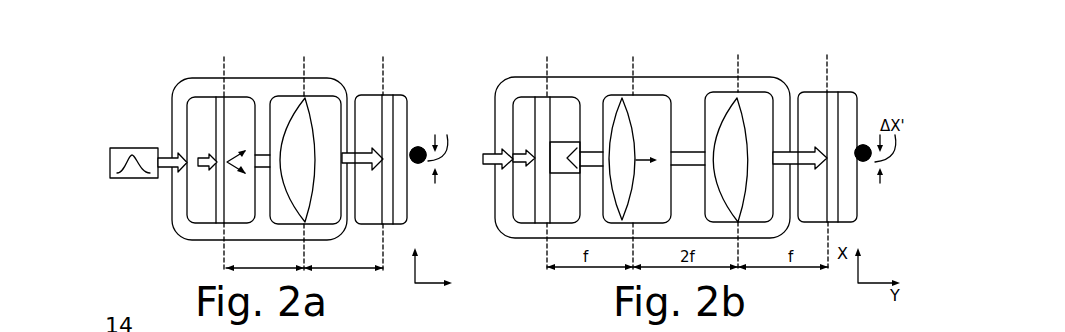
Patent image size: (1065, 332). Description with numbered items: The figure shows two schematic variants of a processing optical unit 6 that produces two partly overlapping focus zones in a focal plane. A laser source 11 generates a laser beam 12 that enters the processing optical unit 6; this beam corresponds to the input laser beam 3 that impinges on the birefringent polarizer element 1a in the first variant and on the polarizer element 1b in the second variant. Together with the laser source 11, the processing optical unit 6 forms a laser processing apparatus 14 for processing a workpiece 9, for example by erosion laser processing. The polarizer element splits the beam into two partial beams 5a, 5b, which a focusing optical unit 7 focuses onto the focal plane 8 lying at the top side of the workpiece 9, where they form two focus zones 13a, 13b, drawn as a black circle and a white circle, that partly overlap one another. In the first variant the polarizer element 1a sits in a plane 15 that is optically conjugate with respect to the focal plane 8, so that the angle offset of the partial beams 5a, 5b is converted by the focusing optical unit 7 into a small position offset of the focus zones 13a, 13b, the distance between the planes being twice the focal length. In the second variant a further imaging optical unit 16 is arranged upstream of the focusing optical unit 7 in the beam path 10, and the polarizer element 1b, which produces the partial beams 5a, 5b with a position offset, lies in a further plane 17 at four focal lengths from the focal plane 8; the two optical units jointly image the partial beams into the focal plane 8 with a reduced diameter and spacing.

In FIG. 2A, the birefringent polarizer element 1a is at (207, 97).
In FIG. 2B, the birefringent polarizer element 1b is at (525, 95).
In FIG. 2A, the input laser beam 3 is at (210, 168).
In FIG. 2B, the input laser beam 3 is at (533, 153).
In FIG. 2A, the partial beam 5a is at (236, 143).
In FIG. 2B, the partial beam 5a is at (551, 115).
In FIG. 2A, the partial beam 5b is at (219, 198).
In FIG. 2B, the partial beam 5b is at (560, 222).
In FIG. 2A, the processing optical unit 6 is at (190, 77).
In FIG. 2A, the focusing optical unit 7 is at (315, 96).
In FIG. 2B, the focusing optical unit 7 is at (758, 92).
In FIG. 2A, the focal plane 8 is at (382, 95).
In FIG. 2B, the focal plane 8 is at (827, 92).
In FIG. 2A, the workpiece 9 is at (392, 96).
In FIG. 2B, the workpiece 9 is at (840, 93).
In FIG. 2A, the beam path 10 is at (262, 138).
In FIG. 2B, the beam path 10 is at (687, 135).
In FIG. 2A, the laser source 11 is at (118, 148).
In FIG. 2A, the laser beam 12 is at (167, 155).
In FIG. 2B, the laser beam 12 is at (492, 166).
In FIG. 2A, the focus zone 13a is at (418, 147).
In FIG. 2B, the focus zone 13a is at (862, 146).
In FIG. 2A, the focus zone 13b is at (417, 165).
In FIG. 2B, the focus zone 13b is at (862, 164).
In FIG. 2A, the laser processing apparatus 14 is at (152, 70).
In FIG. 2A, the optically conjugate plane 15 is at (217, 256).
In FIG. 2B, the further imaging optical unit 16 is at (627, 93).
In FIG. 2B, the further plane 17 is at (546, 262).